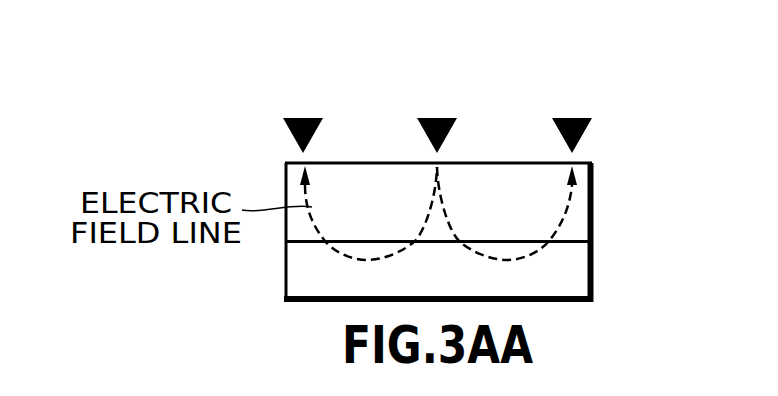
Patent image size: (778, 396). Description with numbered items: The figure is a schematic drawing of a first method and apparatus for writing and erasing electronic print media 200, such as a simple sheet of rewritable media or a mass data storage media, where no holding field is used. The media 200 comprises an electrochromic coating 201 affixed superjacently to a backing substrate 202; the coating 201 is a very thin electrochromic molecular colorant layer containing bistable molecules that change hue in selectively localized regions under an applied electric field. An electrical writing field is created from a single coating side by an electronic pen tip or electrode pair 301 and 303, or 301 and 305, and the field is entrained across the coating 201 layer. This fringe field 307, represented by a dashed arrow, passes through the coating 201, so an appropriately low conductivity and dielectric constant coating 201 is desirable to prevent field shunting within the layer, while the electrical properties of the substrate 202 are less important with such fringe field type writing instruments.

The electronic print media 200 is at (248, 112).
The electrochromic coating 201 is at (594, 205).
The backing substrate 202 is at (594, 268).
The electrode 301 is at (438, 118).
The electrode 303 is at (573, 118).
The electrode 305 is at (303, 118).
The fringe field 307 is at (336, 250).